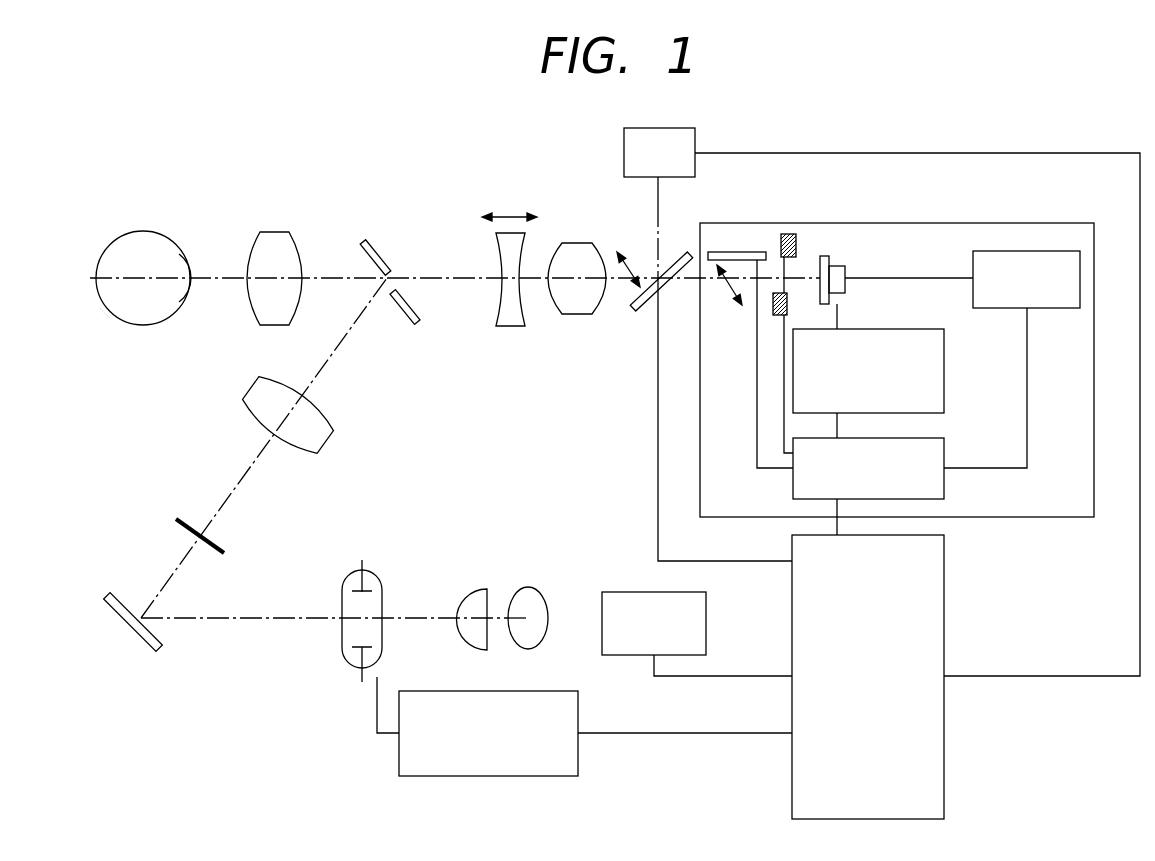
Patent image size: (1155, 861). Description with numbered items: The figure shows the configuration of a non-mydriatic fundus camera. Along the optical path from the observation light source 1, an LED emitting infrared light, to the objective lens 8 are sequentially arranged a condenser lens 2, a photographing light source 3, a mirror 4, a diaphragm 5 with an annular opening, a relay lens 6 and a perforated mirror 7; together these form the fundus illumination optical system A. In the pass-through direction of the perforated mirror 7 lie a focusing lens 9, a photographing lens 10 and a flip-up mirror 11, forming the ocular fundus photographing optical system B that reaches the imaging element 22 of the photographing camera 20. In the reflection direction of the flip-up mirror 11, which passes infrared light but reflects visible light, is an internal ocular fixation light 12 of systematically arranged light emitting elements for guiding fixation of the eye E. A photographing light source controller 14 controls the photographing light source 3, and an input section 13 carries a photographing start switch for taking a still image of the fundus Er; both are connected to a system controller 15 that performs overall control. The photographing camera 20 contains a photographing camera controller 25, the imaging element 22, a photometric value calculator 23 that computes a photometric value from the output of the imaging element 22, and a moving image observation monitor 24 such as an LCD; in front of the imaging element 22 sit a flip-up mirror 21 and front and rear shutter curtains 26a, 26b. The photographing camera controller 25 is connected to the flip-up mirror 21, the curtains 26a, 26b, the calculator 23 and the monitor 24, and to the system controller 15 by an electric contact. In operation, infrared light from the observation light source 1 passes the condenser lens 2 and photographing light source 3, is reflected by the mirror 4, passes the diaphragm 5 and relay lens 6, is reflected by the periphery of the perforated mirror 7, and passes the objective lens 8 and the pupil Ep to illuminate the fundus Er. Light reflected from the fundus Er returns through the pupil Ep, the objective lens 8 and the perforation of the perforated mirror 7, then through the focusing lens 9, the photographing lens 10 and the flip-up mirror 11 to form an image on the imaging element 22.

The observation light source 1 is at (532, 589).
The condenser lens 2 is at (474, 592).
The photographing light source 3 is at (382, 572).
The mirror 4 is at (118, 592).
The diaphragm 5 is at (224, 549).
The relay lens 6 is at (253, 378).
The perforated mirror 7 is at (366, 240).
The objective lens 8 is at (274, 232).
The focusing lens 9 is at (510, 327).
The photographing lens 10 is at (576, 315).
The flip-up mirror 11 is at (678, 254).
The internal ocular fixation light 12 is at (623, 149).
The input section 13 is at (707, 617).
The photographing light source controller 14 is at (398, 754).
The system controller 15 is at (945, 592).
The photographing camera 20 is at (966, 222).
The flip-up mirror 21 is at (743, 251).
The imaging element 22 is at (846, 268).
The photometric value calculator 23 is at (945, 356).
The moving image observation monitor 24 is at (1044, 250).
The photographing camera controller 25 is at (945, 450).
The front curtain 26a is at (778, 317).
The rear curtain 26b is at (789, 233).
The eye to be examined E is at (141, 236).
The pupil Ep is at (181, 259).
The fundus Er is at (103, 303).
The fundus illumination optical system A is at (332, 357).
The ocular fundus photographing optical system B is at (438, 276).